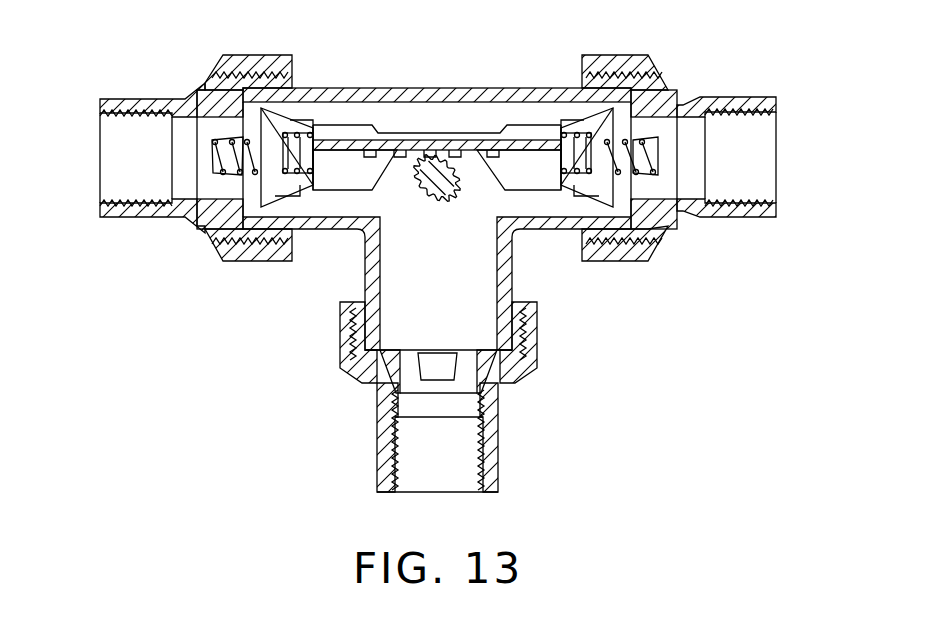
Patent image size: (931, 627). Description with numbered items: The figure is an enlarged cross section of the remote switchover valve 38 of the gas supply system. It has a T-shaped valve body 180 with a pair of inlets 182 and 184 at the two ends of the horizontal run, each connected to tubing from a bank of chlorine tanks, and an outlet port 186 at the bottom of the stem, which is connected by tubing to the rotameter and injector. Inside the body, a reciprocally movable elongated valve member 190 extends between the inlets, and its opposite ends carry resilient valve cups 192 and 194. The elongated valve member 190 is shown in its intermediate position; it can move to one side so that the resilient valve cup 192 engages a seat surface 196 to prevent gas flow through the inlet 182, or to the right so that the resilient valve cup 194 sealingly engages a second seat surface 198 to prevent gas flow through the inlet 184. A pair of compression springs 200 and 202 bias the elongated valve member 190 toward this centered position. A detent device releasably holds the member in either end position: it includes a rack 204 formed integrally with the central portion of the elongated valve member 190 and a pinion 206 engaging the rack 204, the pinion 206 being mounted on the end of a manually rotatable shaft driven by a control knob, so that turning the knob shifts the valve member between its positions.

The remote switchover valve 38 is at (355, 70).
The T-shaped valve body 180 is at (462, 93).
The inlet 182 is at (110, 151).
The inlet 184 is at (753, 157).
The outlet port 186 is at (430, 467).
The elongated valve member 190 is at (358, 121).
The resilient valve cup 192 is at (278, 200).
The resilient valve cup 194 is at (590, 192).
The seat surface 196 is at (253, 216).
The second seat surface 198 is at (622, 222).
The compression spring 200 is at (213, 166).
The compression spring 202 is at (662, 148).
The rack 204 is at (400, 160).
The pinion 206 is at (450, 194).